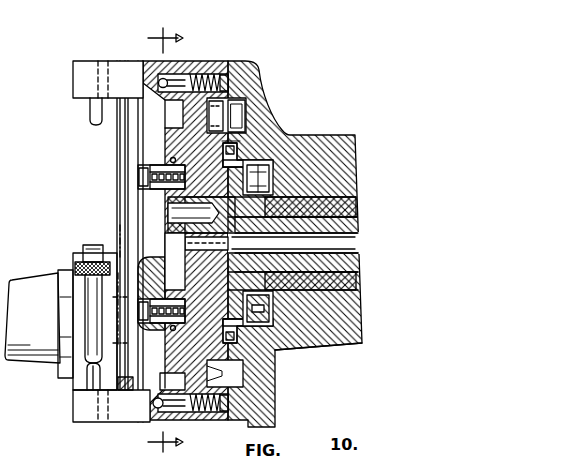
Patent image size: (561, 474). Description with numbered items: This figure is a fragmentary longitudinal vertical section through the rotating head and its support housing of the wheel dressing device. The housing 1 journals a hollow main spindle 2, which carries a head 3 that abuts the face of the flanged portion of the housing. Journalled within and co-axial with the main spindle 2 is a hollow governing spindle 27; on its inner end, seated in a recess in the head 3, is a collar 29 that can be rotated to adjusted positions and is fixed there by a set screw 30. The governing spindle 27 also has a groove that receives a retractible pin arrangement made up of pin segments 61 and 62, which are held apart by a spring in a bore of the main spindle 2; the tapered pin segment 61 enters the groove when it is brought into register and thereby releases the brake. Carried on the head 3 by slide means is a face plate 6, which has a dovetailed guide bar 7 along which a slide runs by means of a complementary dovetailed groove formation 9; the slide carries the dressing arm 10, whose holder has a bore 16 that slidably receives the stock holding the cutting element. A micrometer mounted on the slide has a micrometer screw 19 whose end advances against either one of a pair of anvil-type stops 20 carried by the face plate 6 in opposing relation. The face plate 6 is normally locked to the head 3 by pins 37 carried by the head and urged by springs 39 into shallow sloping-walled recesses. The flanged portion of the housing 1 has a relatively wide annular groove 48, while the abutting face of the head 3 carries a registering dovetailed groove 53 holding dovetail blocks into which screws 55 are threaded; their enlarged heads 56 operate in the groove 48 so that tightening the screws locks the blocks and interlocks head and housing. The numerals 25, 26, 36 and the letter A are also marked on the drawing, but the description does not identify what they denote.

The housing 1 is at (333, 147).
The hollow main spindle 2 is at (350, 203).
The head 3 is at (192, 62).
The face plate 6 is at (140, 135).
The dovetailed guide bar 7 is at (118, 179).
The dovetailed groove formation 9 is at (155, 242).
The dressing arm 10 is at (33, 290).
The bore 16 is at (113, 238).
The micrometer screw 19 is at (90, 345).
The stops 20 is at (93, 112).
The lever 25 is at (32, 210).
The link 26 is at (22, 168).
The hollow governing spindle 27 is at (360, 221).
The collar 29 is at (312, 333).
The set screw 30 is at (235, 256).
The knob flange 36 is at (36, 314).
The pins 37 is at (157, 80).
The springs 39 is at (218, 60).
The annular groove 48 is at (237, 378).
The dovetailed groove 53 is at (225, 98).
The screws 55 is at (245, 100).
The enlarged heads 56 is at (258, 102).
The pin segment 61 is at (282, 165).
The pin segment 62 is at (280, 193).
The point A is at (262, 107).